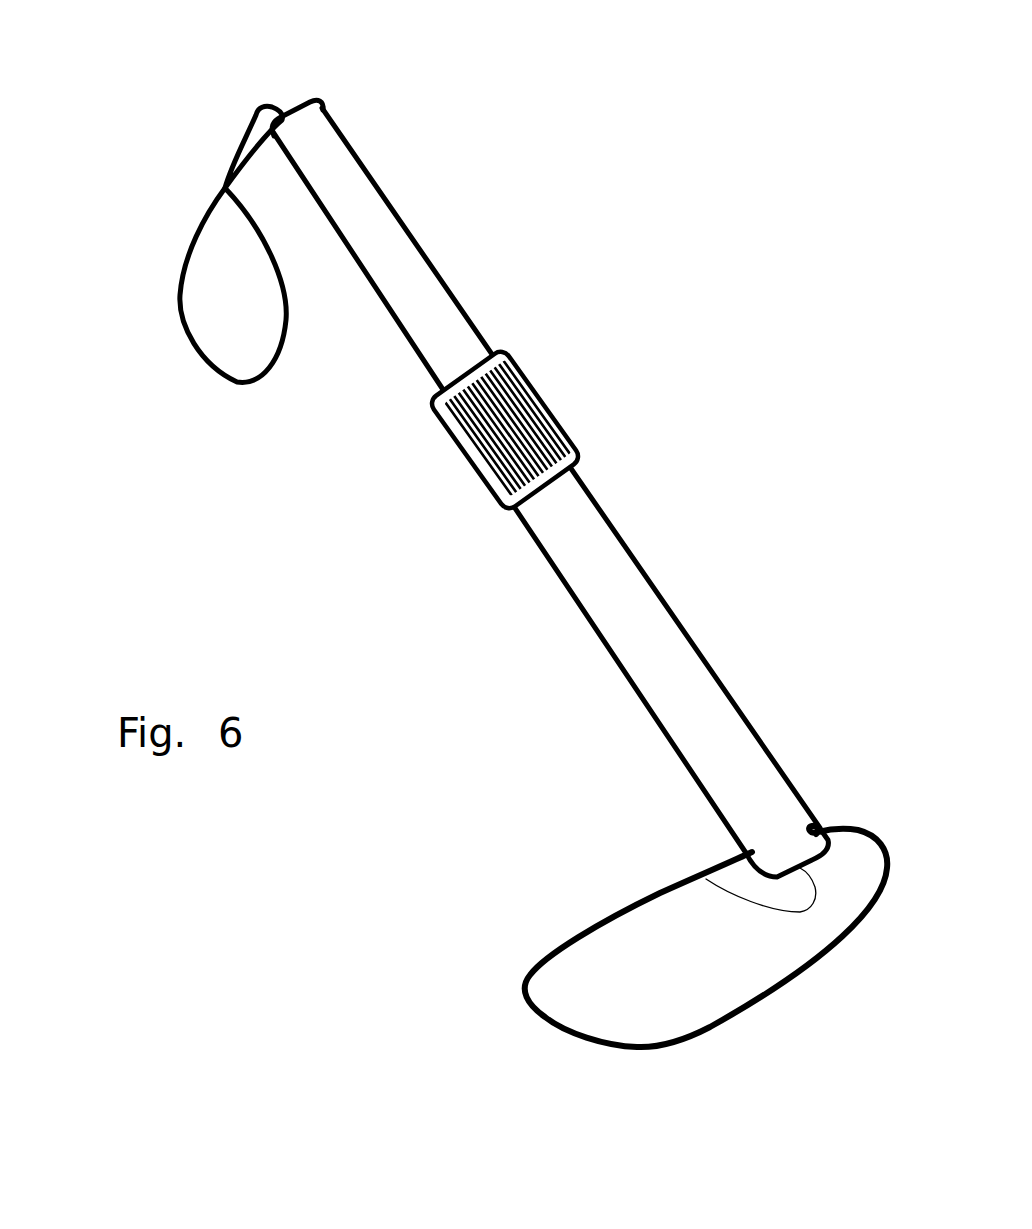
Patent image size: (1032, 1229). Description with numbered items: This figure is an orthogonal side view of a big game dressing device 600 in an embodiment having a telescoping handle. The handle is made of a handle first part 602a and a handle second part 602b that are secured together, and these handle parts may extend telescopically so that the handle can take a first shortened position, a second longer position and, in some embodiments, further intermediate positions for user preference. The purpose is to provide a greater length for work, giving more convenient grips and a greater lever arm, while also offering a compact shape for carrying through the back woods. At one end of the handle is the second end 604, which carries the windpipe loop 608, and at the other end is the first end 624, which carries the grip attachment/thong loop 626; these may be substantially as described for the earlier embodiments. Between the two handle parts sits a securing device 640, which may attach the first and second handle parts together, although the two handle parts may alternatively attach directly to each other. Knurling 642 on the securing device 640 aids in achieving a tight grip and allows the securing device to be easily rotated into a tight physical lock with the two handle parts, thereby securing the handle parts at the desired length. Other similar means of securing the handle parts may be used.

The big game dressing device 600 is at (283, 565).
The handle first part 602a is at (602, 560).
The handle second part 602b is at (392, 202).
The second end 604 is at (291, 106).
The windpipe loop 608 is at (205, 218).
The first end 624 is at (706, 879).
The grip attachment/thong loop 626 is at (567, 935).
The securing device 640 is at (496, 367).
The knurling 642 is at (560, 420).